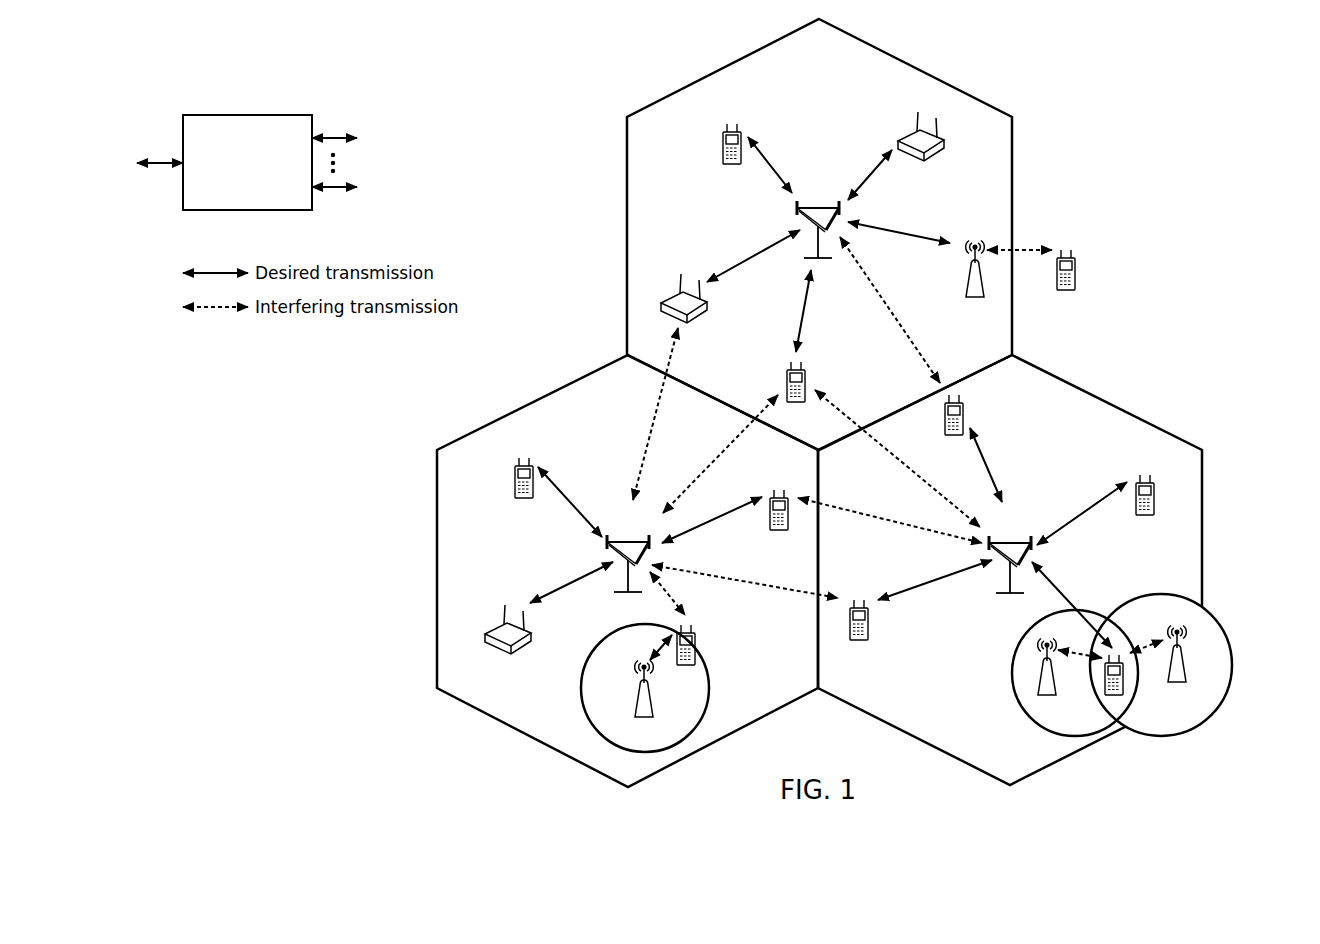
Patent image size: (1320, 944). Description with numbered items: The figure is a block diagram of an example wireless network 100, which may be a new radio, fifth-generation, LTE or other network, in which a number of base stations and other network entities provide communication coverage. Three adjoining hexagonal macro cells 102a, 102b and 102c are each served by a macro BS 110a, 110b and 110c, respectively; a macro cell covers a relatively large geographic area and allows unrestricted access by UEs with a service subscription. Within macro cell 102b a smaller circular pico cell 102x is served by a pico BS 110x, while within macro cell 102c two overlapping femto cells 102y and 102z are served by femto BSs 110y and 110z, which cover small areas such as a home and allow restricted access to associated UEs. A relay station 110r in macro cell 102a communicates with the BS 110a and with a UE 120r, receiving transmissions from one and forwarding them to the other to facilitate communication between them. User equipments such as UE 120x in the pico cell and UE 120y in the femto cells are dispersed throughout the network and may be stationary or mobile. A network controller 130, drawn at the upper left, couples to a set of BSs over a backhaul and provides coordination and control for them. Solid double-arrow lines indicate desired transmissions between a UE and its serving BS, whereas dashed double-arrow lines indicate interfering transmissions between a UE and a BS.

The wireless network 100 is at (1140, 80).
The macro cell 102a is at (914, 66).
The macro cell 102b is at (534, 400).
The macro cell 102c is at (1106, 400).
The pico cell 102x is at (601, 640).
The femto cell 102y is at (1018, 644).
The femto cell 102z is at (1156, 594).
The macro BS 110a is at (813, 205).
The macro BS 110b is at (630, 540).
The macro BS 110c is at (1012, 540).
The relay station 110r is at (966, 282).
The pico BS 110x is at (652, 712).
The femto BS 110y is at (1054, 690).
The femto BS 110z is at (1184, 678).
The UE 120r is at (1075, 283).
The UE 120x is at (695, 641).
The UE 120y is at (1104, 692).
The network controller 130 is at (243, 115).